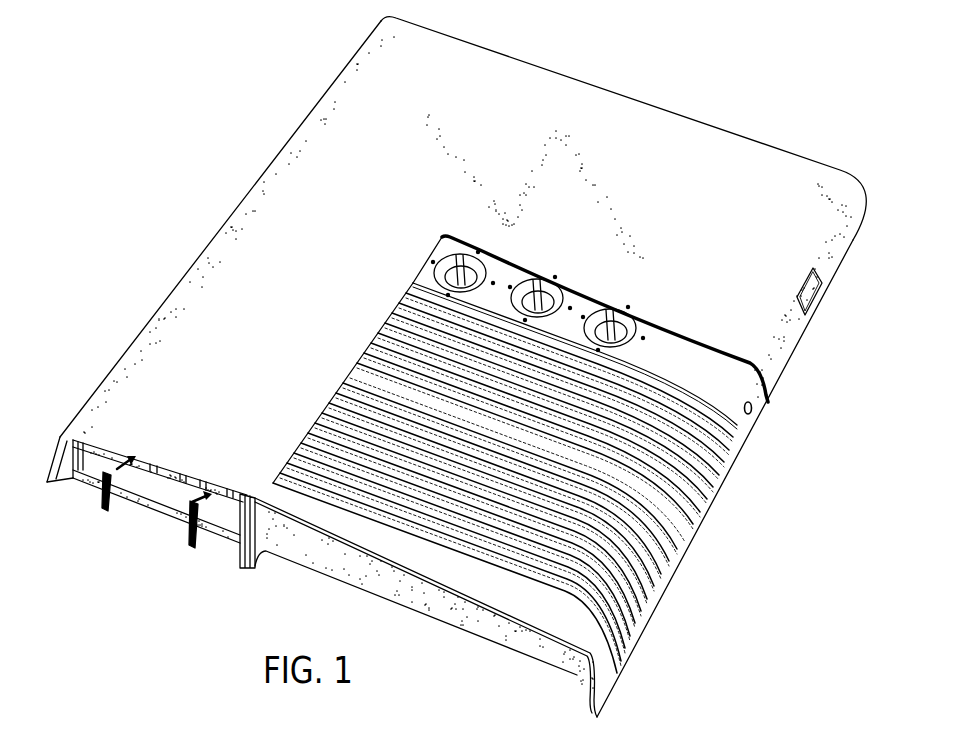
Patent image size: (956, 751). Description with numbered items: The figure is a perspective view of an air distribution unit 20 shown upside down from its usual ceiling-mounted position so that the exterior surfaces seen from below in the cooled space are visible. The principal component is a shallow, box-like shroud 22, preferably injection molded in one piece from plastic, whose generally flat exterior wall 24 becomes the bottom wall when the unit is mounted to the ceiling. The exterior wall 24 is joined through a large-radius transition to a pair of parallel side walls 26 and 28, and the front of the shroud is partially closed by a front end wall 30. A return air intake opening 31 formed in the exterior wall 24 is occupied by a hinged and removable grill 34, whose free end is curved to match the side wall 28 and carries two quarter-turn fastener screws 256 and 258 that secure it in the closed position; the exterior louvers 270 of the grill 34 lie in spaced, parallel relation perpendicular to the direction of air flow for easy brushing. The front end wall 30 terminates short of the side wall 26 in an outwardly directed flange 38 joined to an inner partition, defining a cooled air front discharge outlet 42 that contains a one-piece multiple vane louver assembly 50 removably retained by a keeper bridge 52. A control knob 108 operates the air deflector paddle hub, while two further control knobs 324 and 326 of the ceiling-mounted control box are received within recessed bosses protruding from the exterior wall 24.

The air distribution unit 20 is at (651, 91).
The shroud 22 is at (214, 250).
The exterior wall 24 is at (703, 137).
The side wall 26 is at (50, 457).
The side wall 28 is at (778, 369).
The front end wall 30 is at (423, 597).
The return air intake opening 31 is at (670, 368).
The grill 34 is at (681, 537).
The flange 38 is at (257, 557).
The front discharge outlet 42 is at (173, 527).
The louver assembly 50 is at (164, 488).
The keeper bridge 52 is at (88, 488).
The control knob 108 is at (462, 248).
The quarter-turn fastener screw 256 is at (641, 609).
The quarter-turn fastener screw 258 is at (709, 490).
The exterior louvers 270 is at (678, 553).
The control knob 324 is at (611, 313).
The control knob 326 is at (543, 287).